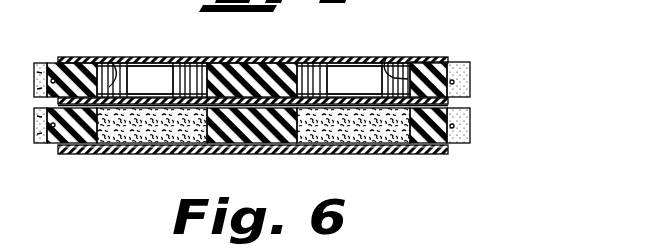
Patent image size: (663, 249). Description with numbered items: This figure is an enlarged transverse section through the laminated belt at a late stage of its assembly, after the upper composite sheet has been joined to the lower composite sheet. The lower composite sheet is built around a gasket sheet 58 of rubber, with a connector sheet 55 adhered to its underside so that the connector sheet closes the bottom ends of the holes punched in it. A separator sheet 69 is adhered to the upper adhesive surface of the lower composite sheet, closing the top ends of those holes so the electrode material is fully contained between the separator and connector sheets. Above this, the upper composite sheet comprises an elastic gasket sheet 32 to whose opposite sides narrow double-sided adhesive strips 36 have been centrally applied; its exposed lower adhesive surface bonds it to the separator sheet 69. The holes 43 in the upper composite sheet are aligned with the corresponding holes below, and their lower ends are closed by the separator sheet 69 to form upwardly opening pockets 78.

The sheet of gasket material 32 is at (262, 72).
The double sided adhesive strips 36 is at (436, 62).
The holes 43 is at (116, 63).
The sheet of connector material 55 is at (143, 155).
The gasket sheet 58 is at (244, 154).
The sheet of separator material 69 is at (157, 82).
The upwardly opening pockets 78 is at (147, 49).